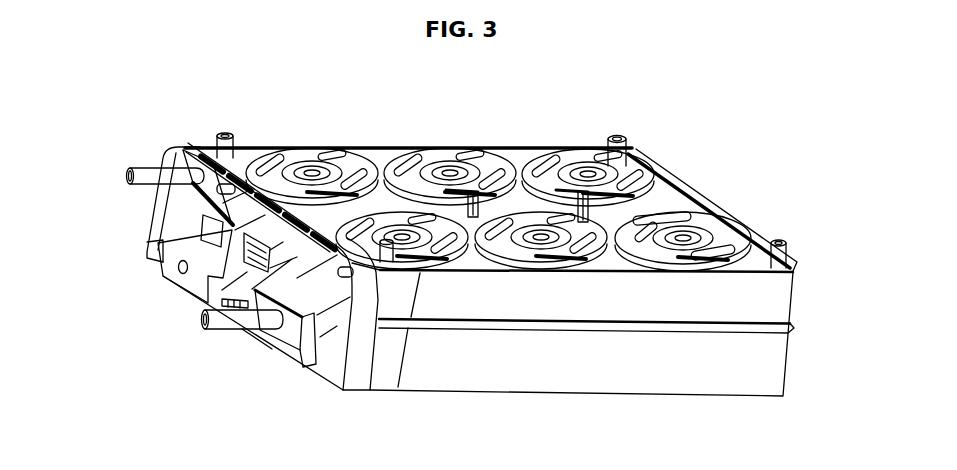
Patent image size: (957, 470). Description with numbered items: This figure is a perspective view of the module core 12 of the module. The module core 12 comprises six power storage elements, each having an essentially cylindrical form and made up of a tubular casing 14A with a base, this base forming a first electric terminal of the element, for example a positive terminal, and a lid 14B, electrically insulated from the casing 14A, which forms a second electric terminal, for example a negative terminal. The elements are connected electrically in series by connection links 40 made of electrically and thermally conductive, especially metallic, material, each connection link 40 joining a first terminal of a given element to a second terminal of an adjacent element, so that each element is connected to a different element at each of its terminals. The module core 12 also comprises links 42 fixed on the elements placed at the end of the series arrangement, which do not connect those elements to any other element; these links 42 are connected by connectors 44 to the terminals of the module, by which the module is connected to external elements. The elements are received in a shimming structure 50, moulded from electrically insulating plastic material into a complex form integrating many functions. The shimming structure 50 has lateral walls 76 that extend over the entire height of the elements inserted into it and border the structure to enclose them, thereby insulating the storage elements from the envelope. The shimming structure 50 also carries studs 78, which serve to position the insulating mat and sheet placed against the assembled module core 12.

The module core 12 is at (484, 96).
The tubular casing 14A is at (735, 237).
The lid 14B is at (645, 177).
The connection link 40 is at (652, 208).
The link 42 is at (282, 345).
The connector 44 is at (229, 325).
The shimming structure 50 is at (608, 368).
The lateral wall 76 is at (493, 364).
The stud 78 is at (229, 129).